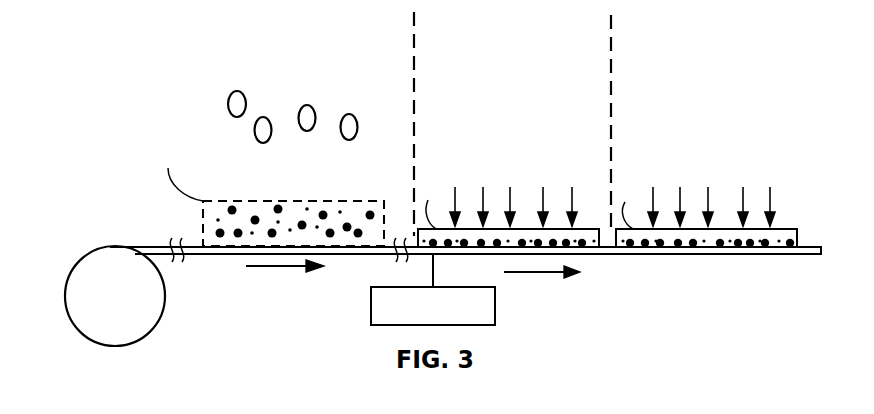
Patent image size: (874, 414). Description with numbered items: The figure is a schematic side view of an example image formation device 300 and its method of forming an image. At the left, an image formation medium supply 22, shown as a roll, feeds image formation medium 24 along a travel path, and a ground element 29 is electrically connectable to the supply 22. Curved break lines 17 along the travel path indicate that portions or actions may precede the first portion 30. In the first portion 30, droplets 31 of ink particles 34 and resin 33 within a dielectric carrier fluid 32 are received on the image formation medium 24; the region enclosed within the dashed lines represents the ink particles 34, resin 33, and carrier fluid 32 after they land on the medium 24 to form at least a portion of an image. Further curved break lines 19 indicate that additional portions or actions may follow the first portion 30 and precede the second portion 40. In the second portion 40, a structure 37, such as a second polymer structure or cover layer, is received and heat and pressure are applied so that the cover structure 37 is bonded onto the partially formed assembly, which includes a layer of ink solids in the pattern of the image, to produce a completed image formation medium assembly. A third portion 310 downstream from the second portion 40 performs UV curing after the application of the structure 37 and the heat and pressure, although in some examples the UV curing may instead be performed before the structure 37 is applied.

The system for forming a composite material 300 is at (141, 56).
The first portion 30 is at (322, 56).
The second portion 40 is at (501, 124).
The third portion 310 is at (693, 122).
The image formation medium supply 22 is at (101, 242).
The image formation medium 24 is at (163, 246).
The curved break lines 17 is at (177, 265).
The curved break lines 19 is at (400, 228).
The droplets 31 is at (208, 104).
The dielectric carrier fluid 32 is at (357, 207).
The resin 33 is at (313, 207).
The ink particles 34 is at (259, 213).
The structure 37 is at (597, 229).
The ground element 29 is at (371, 299).